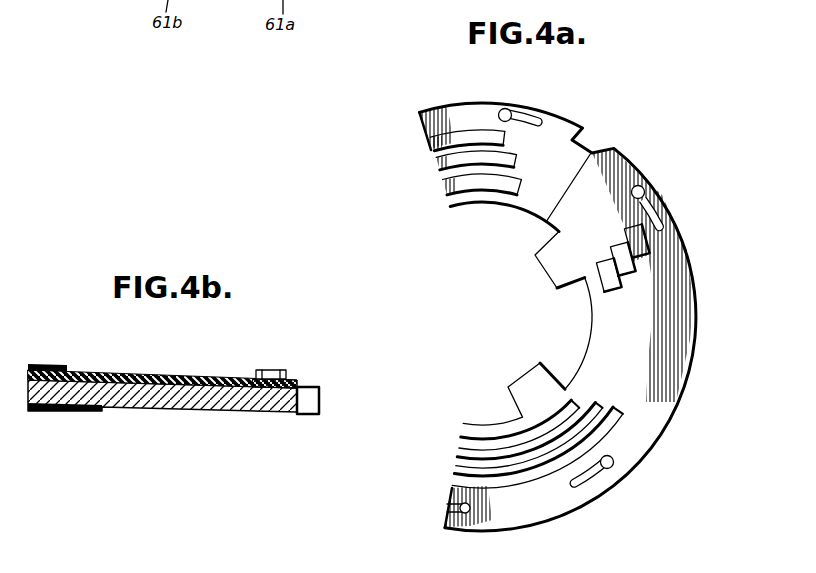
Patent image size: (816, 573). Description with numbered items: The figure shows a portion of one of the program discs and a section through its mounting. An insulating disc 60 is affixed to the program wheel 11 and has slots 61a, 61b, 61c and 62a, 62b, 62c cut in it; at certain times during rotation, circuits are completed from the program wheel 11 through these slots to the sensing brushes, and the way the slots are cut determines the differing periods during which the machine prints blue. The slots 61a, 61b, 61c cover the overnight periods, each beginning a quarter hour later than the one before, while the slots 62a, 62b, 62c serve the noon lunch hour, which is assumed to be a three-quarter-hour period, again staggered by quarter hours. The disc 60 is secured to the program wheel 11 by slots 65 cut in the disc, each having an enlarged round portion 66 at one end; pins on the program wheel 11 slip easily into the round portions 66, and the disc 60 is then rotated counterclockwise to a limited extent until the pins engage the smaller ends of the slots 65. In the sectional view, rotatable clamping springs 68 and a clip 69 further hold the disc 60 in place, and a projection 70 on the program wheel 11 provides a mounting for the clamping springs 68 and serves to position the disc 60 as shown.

In FIG. 4a, the insulating disc 60 is at (607, 336).
In FIG. 4b, the insulating disc 60 is at (92, 370).
In FIG. 4a, the slot 61a is at (446, 140).
In FIG. 4a, the slot 61b is at (448, 163).
In FIG. 4a, the slot 61c is at (458, 186).
In FIG. 4a, the slot 62a is at (644, 248).
In FIG. 4a, the slot 62b is at (631, 271).
In FIG. 4a, the slot 62c is at (615, 286).
In FIG. 4a, the slot 65 is at (536, 112).
In FIG. 4a, the enlarged round portion 66 is at (505, 108).
In FIG. 4b, the program wheel 11 is at (200, 407).
In FIG. 4b, the clamping spring 68 is at (257, 369).
In FIG. 4b, the clip 69 is at (38, 364).
In FIG. 4b, the projection 70 is at (299, 379).